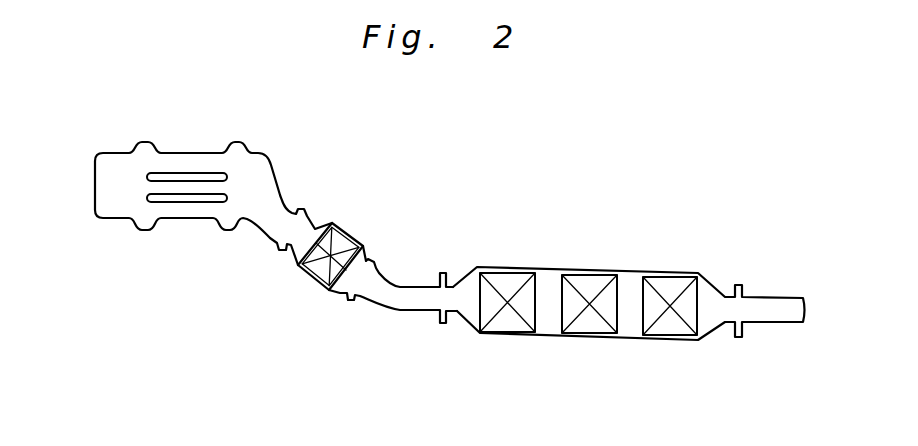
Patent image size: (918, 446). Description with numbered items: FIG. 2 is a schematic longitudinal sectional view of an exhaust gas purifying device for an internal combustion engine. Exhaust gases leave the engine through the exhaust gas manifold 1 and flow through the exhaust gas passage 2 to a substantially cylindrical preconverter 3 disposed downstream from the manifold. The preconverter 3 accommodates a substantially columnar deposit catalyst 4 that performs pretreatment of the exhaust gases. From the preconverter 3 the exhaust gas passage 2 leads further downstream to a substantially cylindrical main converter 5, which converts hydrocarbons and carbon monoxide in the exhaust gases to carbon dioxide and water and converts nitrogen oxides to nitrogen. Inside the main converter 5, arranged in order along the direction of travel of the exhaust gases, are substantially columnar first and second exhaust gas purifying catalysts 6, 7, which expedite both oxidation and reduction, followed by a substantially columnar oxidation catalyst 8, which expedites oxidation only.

The exhaust gas manifold 1 is at (268, 164).
The exhaust gas passage 2 is at (403, 285).
The preconverter 3 is at (339, 262).
The deposit catalyst 4 is at (322, 278).
The main converter 5 is at (595, 262).
The first exhaust gas purifying catalyst 6 is at (510, 323).
The second exhaust gas purifying catalyst 7 is at (593, 325).
The oxidation catalyst 8 is at (672, 328).